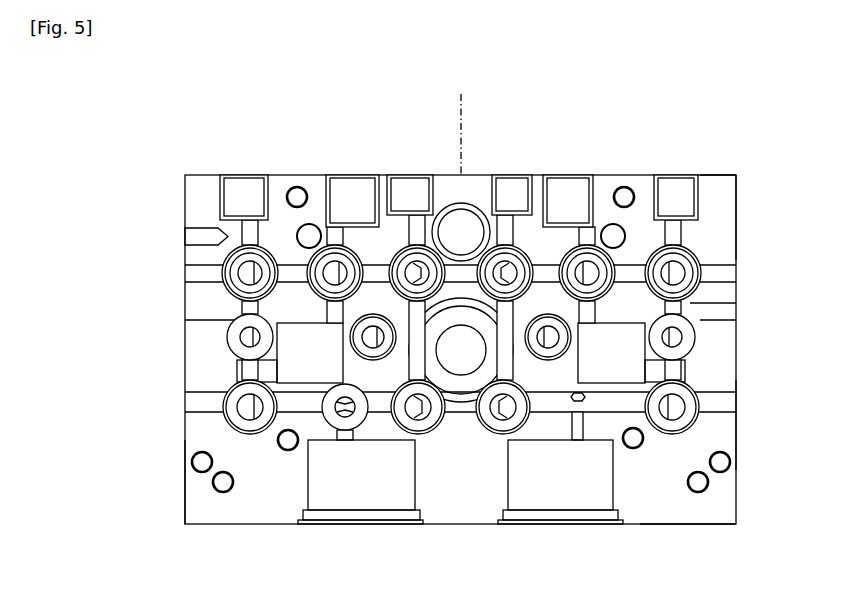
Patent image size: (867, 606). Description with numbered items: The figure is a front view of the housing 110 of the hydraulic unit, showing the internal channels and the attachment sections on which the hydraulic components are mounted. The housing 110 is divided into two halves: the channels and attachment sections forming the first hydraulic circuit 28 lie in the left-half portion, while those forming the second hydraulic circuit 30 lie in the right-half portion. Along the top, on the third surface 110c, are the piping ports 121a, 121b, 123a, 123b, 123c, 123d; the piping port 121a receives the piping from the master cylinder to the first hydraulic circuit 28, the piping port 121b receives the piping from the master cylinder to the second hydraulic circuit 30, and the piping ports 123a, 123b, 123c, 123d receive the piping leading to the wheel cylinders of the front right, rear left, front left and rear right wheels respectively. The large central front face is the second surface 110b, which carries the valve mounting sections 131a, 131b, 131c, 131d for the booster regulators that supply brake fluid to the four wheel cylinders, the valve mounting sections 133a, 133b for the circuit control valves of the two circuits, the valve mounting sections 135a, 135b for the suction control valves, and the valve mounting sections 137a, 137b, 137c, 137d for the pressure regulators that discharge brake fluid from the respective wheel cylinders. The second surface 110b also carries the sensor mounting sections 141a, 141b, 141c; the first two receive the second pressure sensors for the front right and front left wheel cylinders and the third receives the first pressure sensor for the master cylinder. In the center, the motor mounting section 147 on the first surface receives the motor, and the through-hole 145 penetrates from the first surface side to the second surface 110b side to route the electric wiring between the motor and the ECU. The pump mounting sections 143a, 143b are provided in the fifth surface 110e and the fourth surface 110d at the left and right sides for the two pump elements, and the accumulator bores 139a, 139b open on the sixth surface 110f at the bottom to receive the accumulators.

The first hydraulic circuit 28 is at (461, 94).
The second hydraulic circuit 30 is at (461, 94).
The housing 110 is at (720, 495).
The second surface 110b is at (720, 433).
The third surface 110c is at (717, 175).
The fourth surface 110d is at (737, 198).
The fifth surface 110e is at (187, 482).
The sixth surface 110f is at (700, 525).
The piping port 121a is at (337, 183).
The piping port 121b is at (590, 183).
The piping port 123a is at (246, 180).
The piping port 123b is at (398, 183).
The piping port 123c is at (678, 183).
The piping port 123d is at (548, 183).
The valve mounting section 131a is at (228, 258).
The valve mounting section 131b is at (400, 262).
The valve mounting section 131c is at (700, 258).
The valve mounting section 131d is at (520, 255).
The valve mounting section 133a is at (340, 292).
The valve mounting section 133b is at (600, 297).
The valve mounting section 135a is at (360, 352).
The valve mounting section 135b is at (565, 352).
The valve mounting section 137a is at (228, 410).
The valve mounting section 137b is at (422, 428).
The valve mounting section 137c is at (700, 410).
The valve mounting section 137d is at (502, 428).
The accumulator bore 139a is at (334, 500).
The accumulator bore 139b is at (575, 500).
The sensor mounting section 141a is at (243, 337).
The sensor mounting section 141b is at (680, 335).
The sensor mounting section 141c is at (355, 420).
The pump mounting section 143a is at (200, 363).
The pump mounting section 143b is at (725, 363).
The through-hole 145 is at (470, 223).
The motor mounting section 147 is at (460, 340).